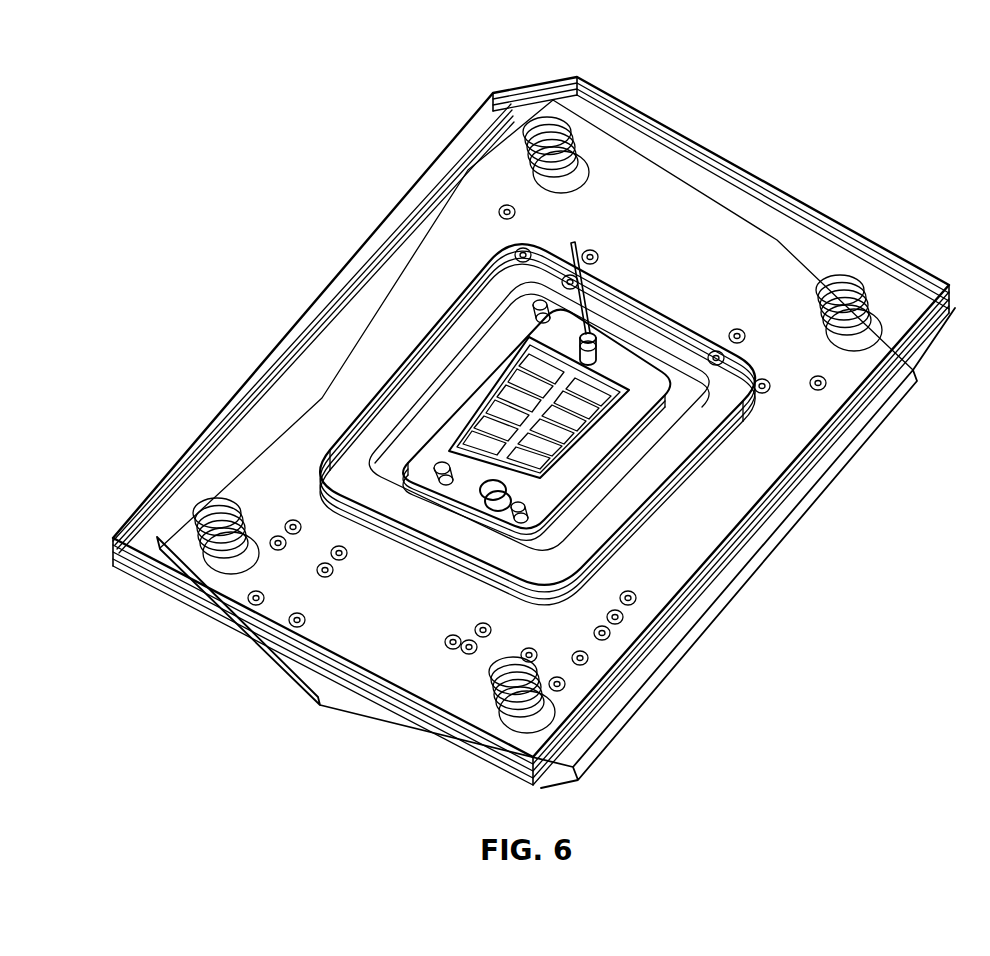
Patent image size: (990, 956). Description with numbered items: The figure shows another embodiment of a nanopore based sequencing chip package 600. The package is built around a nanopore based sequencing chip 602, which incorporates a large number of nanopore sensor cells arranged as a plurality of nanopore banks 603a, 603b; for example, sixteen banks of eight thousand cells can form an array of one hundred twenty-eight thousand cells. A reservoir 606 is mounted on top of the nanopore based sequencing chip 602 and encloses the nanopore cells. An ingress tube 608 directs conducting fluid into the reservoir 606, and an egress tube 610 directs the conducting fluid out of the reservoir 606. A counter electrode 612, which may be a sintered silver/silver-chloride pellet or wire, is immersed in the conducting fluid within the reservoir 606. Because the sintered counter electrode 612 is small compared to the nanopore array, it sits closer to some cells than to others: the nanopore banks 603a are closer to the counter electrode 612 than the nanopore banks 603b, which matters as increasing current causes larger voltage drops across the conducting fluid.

The nanopore based sequencing chip package 600 is at (121, 67).
The nanopore based sequencing chip 602 is at (600, 405).
The nanopore banks 603a is at (595, 373).
The nanopore banks 603b is at (543, 477).
The reservoir 606 is at (548, 352).
The ingress tube 608 is at (475, 503).
The egress tube 610 is at (435, 478).
The counter electrode 612 is at (592, 327).